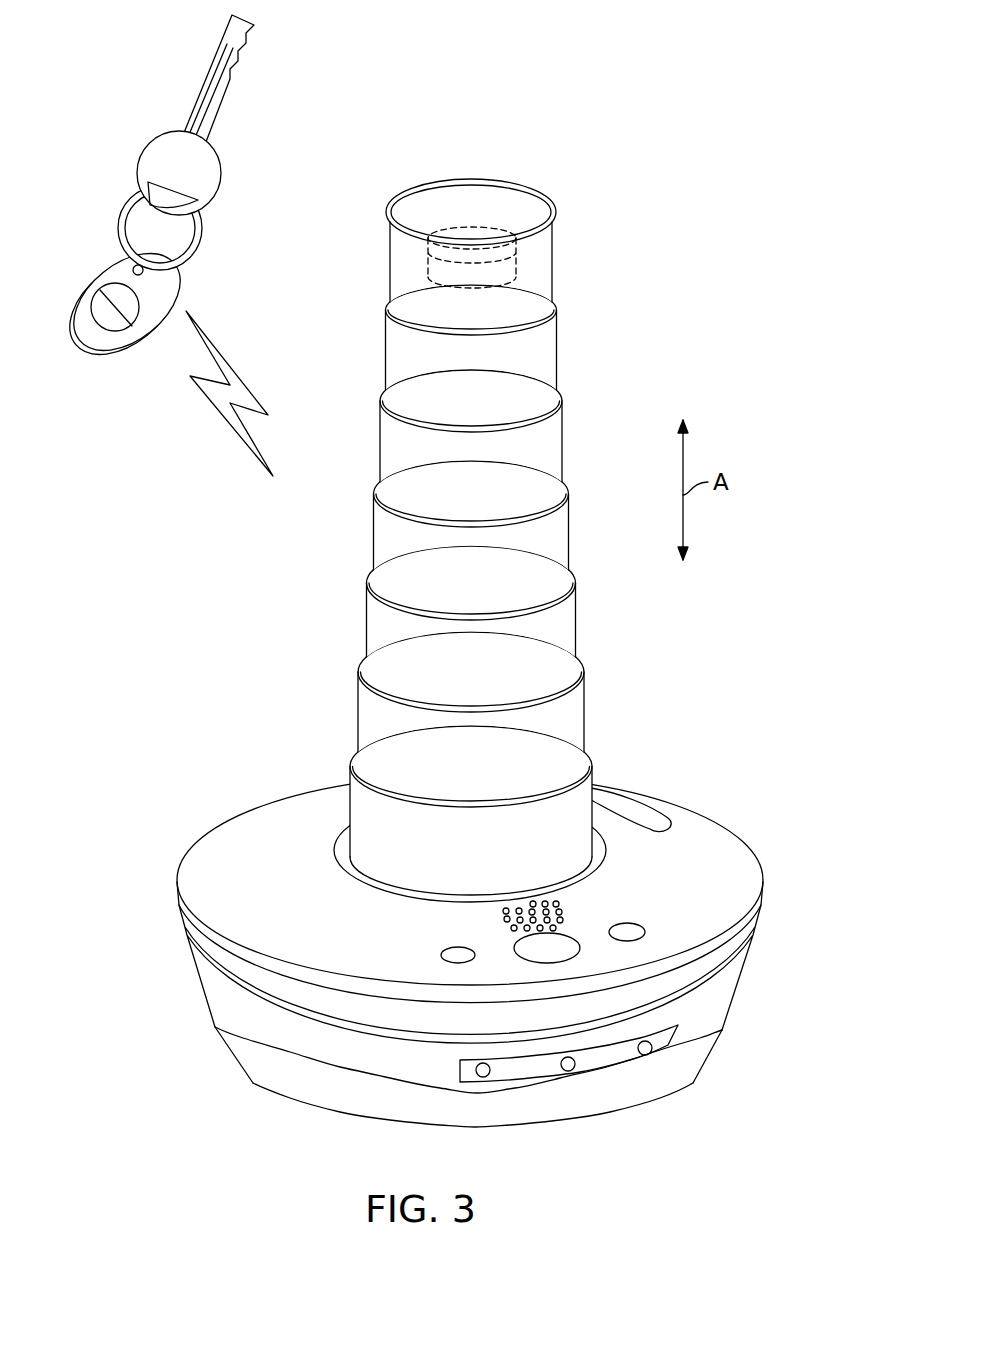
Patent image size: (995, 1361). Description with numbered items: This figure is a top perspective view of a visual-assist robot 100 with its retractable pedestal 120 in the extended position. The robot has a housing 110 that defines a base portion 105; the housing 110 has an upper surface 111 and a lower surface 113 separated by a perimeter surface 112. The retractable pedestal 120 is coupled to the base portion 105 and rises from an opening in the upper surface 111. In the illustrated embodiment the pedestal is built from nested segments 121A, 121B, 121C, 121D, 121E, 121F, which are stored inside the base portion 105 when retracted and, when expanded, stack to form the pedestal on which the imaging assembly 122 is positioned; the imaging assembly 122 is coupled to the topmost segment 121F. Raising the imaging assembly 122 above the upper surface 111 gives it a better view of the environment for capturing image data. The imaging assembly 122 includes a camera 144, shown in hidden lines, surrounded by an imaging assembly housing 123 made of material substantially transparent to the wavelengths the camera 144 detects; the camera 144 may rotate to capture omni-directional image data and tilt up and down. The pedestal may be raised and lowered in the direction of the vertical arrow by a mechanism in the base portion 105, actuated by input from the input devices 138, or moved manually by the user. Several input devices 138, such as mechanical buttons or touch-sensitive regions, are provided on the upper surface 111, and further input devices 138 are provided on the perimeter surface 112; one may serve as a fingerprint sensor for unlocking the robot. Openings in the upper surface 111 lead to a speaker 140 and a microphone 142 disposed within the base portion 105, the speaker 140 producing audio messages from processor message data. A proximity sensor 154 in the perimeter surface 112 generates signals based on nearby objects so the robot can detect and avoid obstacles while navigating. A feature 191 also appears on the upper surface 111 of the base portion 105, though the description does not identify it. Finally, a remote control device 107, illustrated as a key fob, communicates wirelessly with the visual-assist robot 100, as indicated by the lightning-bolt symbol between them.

The visual-assist robot 100 is at (444, 588).
The base portion 105 is at (498, 670).
The remote control device 107 is at (83, 238).
The housing 110 is at (455, 939).
The upper surface 111 is at (210, 850).
The perimeter surface 112 is at (210, 998).
The lower surface 113 is at (252, 1082).
The retractable pedestal 120 is at (479, 518).
The segment 121A is at (349, 806).
The segment 121B is at (356, 706).
The segment 121C is at (365, 628).
The segment 121D is at (373, 536).
The segment 121E is at (379, 450).
The segment 121F is at (386, 356).
The imaging assembly 122 is at (499, 240).
The imaging assembly housing 123 is at (548, 246).
The camera 144 is at (430, 258).
The input devices 138 is at (441, 957).
The speaker 140 is at (492, 922).
The microphone 142 is at (448, 916).
The proximity sensor 154 is at (568, 1072).
The slot 191 is at (627, 797).